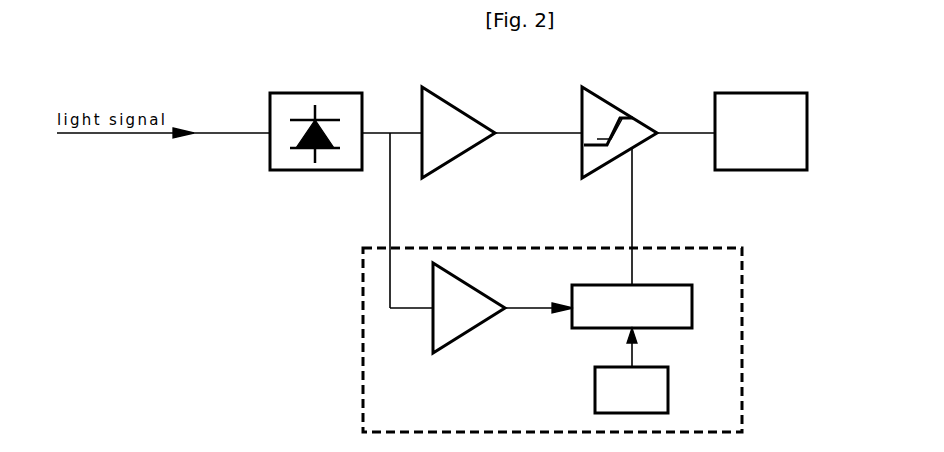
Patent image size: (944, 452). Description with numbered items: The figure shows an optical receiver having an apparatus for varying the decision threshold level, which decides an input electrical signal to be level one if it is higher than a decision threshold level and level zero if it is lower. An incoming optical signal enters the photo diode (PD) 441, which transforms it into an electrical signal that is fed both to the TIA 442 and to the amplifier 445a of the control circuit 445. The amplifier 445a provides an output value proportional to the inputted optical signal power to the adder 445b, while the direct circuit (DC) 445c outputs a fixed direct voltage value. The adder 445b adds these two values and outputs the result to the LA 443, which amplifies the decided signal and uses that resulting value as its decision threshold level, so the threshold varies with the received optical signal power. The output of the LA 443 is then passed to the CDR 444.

The photo diode (PD) 441 is at (334, 93).
The TIA 442 is at (445, 97).
The LA 443 is at (606, 98).
The CDR 444 is at (778, 93).
The control circuit 445 is at (745, 385).
The amplifier 445a is at (430, 337).
The adder 445b is at (672, 328).
The direct circuit (DC) 445c is at (668, 390).